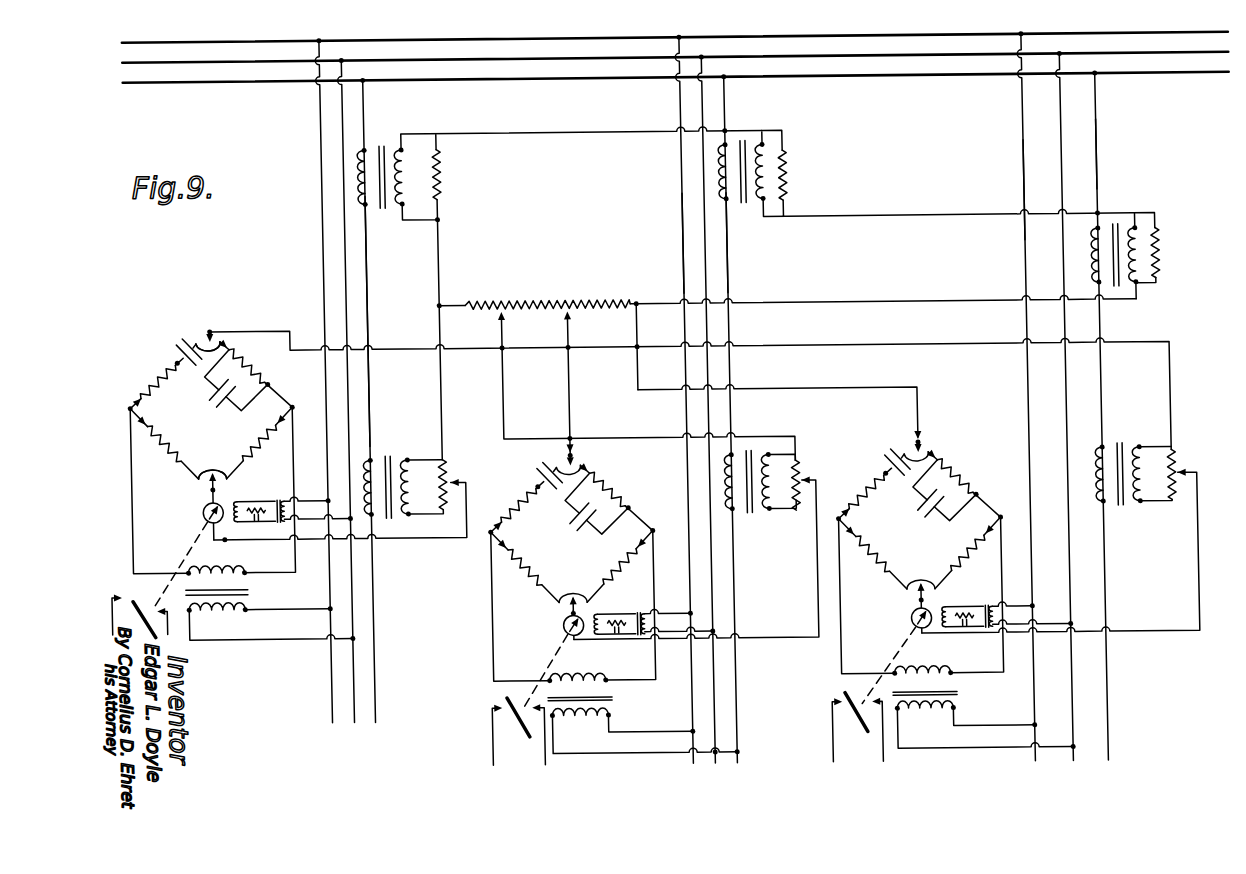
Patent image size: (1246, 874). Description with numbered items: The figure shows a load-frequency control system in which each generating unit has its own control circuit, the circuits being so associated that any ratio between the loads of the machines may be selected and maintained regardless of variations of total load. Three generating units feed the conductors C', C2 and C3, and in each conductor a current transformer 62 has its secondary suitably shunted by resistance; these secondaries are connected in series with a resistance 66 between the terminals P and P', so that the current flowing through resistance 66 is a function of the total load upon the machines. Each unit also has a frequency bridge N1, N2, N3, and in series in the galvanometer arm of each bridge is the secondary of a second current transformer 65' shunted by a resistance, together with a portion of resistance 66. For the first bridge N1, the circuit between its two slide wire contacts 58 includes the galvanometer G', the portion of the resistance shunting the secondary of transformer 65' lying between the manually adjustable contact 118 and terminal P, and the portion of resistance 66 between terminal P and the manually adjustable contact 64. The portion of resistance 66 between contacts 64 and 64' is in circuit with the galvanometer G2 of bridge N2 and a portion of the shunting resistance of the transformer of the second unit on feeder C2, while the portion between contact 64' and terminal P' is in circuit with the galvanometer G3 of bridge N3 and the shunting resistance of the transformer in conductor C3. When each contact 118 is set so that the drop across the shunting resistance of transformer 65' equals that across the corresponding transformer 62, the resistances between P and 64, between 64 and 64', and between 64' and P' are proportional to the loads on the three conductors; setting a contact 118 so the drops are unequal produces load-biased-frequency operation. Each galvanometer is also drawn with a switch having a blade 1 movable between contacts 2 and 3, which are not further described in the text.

The current transformer 62 is at (386, 145).
The current transformer 65' is at (769, 463).
The manually adjustable contact 118 is at (452, 492).
The slide wire contact 58 is at (204, 332).
The manually adjustable contact 64 is at (626, 386).
The manually adjustable contact 64' is at (550, 383).
The resistance 66 is at (528, 308).
The terminal of resistance 66 P is at (447, 291).
The terminal of resistance 66 P' is at (646, 329).
The conductor C' is at (373, 321).
The feeder conductor C2 is at (678, 236).
The conductor C3 is at (1020, 201).
The frequency bridge N1 is at (175, 392).
The frequency bridge N2 is at (537, 520).
The frequency bridge N3 is at (888, 500).
The galvanometer G' is at (201, 515).
The galvanometer G2 is at (563, 624).
The galvanometer G3 is at (910, 617).
The switch blade 1 is at (500, 659).
The switch contact 2 is at (818, 710).
The switch contact 3 is at (855, 740).